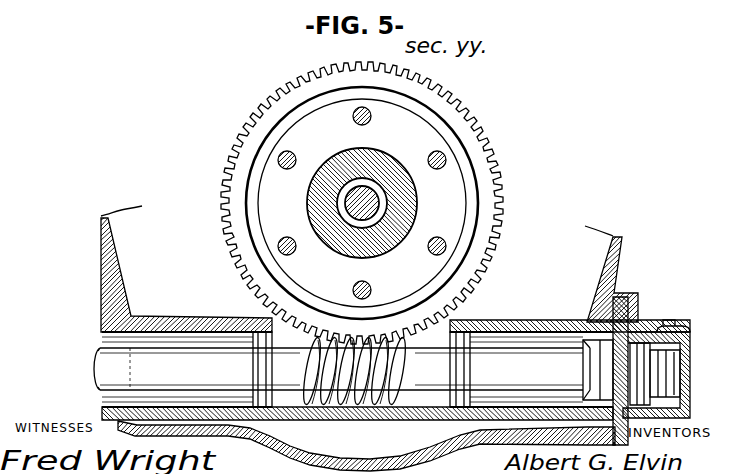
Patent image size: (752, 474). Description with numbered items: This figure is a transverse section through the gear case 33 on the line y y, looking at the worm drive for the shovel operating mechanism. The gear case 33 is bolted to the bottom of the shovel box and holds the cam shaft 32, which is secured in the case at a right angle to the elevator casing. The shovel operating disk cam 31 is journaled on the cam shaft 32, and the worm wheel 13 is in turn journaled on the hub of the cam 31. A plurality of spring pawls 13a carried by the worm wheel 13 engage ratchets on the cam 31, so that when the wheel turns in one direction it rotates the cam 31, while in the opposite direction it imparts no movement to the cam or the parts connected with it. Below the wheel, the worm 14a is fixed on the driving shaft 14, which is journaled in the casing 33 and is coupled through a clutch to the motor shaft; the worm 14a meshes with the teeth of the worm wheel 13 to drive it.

The worm wheel 13 is at (496, 160).
The spring pawls 13a is at (435, 248).
The driving shaft 14 is at (387, 372).
The worm 14a is at (385, 390).
The shovel operating disk cam 31 is at (406, 202).
The cam shaft 32 is at (368, 198).
The gear case 33 is at (612, 263).